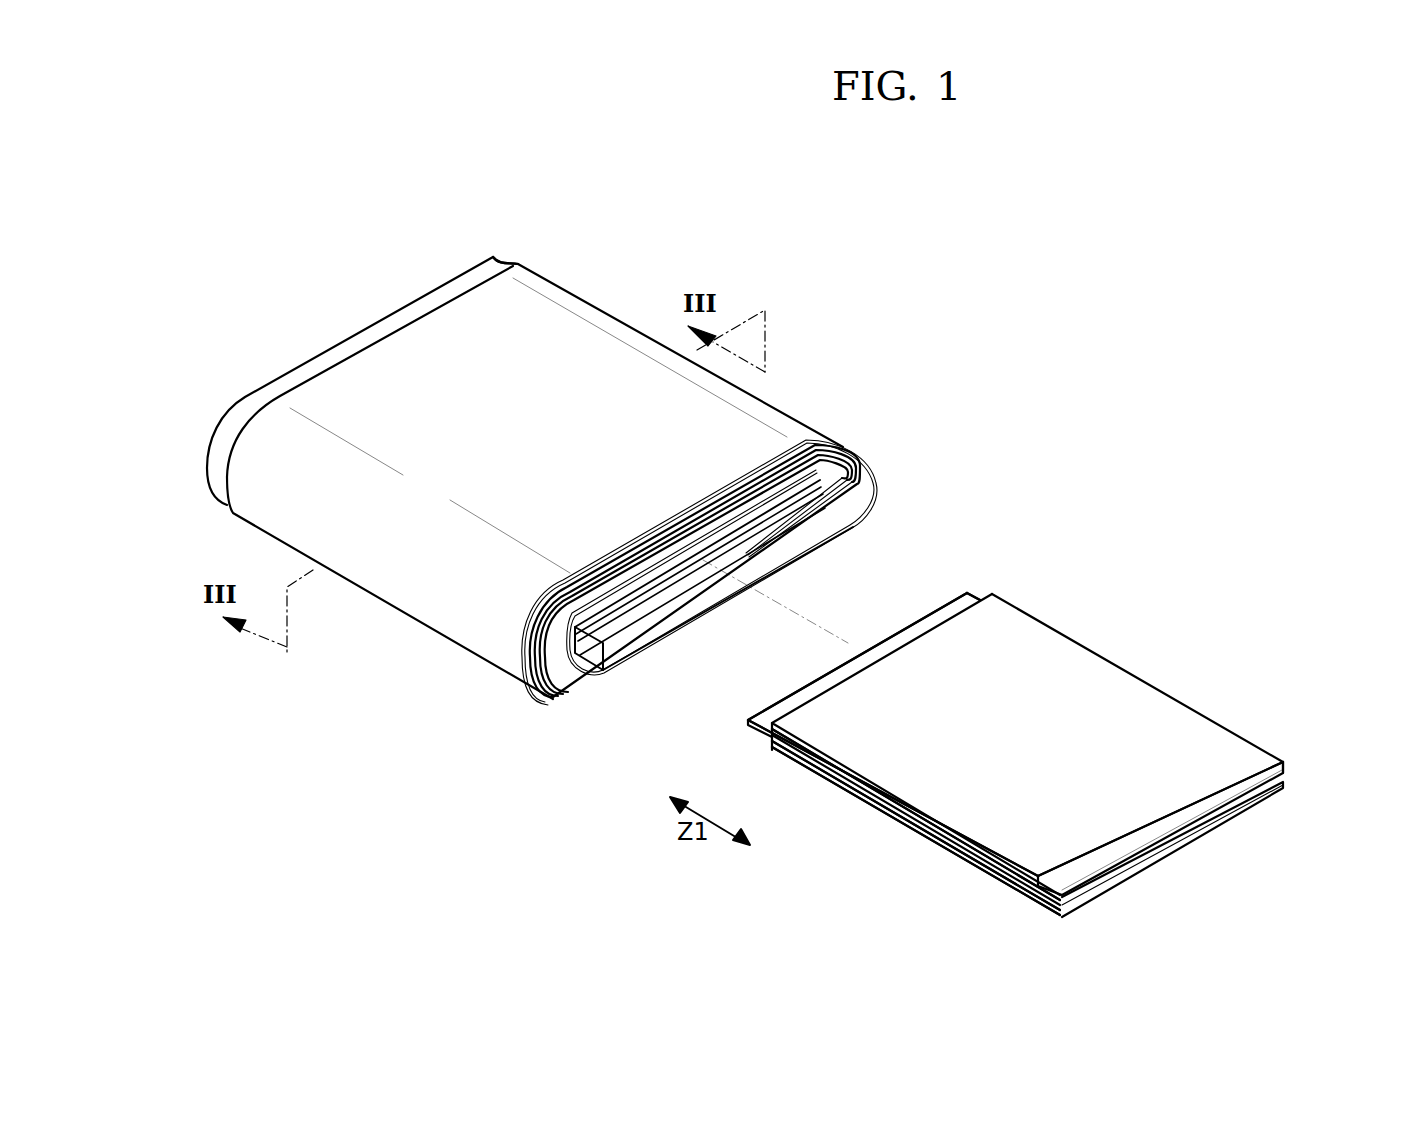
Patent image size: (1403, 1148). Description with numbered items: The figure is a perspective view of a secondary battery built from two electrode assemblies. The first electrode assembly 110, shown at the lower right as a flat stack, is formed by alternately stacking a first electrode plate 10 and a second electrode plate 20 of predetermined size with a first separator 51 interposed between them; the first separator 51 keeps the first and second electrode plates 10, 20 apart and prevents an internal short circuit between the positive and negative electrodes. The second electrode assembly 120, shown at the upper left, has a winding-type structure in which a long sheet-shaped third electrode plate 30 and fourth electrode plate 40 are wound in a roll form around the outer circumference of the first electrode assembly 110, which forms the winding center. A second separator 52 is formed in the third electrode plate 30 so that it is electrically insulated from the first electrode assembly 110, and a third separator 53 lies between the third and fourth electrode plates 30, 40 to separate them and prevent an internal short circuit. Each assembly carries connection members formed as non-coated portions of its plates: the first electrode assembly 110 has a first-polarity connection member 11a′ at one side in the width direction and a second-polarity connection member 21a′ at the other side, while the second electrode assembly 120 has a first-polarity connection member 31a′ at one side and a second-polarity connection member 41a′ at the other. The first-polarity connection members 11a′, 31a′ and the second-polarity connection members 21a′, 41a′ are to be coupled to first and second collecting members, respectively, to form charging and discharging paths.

The second electrode assembly 120 is at (604, 262).
The connection member 31a′ is at (493, 262).
The connection member 41a′ is at (808, 472).
The second separator 52 is at (787, 520).
The third electrode plate 30 is at (773, 542).
The third separator 53 is at (693, 587).
The fourth electrode plate 40 is at (677, 627).
The first electrode assembly 110 is at (842, 811).
The first electrode plate 10 is at (892, 803).
The second electrode plate 20 is at (917, 810).
The first separator 51 is at (997, 877).
The connection member 11a′ is at (965, 602).
The connection member 21a′ is at (1260, 762).